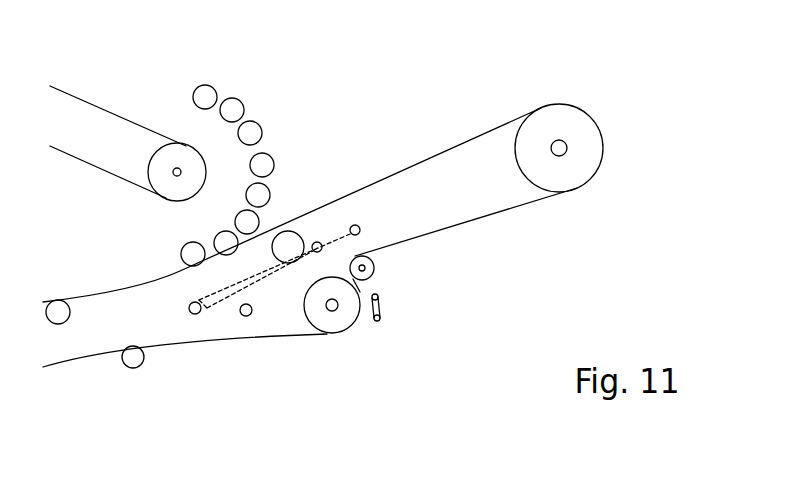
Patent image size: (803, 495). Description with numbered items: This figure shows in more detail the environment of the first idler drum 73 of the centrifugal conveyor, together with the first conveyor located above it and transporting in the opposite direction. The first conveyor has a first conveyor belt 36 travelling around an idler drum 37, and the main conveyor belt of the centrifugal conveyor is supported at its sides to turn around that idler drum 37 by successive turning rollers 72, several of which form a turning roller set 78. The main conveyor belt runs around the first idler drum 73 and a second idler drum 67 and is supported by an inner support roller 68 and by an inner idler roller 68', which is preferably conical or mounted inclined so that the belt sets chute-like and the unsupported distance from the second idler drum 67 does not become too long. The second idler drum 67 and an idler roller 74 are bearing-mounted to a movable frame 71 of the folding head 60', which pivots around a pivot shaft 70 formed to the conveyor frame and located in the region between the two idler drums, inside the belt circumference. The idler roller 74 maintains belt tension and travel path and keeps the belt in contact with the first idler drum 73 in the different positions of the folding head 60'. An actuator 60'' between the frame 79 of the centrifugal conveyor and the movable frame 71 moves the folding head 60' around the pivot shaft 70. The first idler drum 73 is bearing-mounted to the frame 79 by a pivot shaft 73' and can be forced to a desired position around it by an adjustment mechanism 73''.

The first conveyor belt 36 is at (115, 113).
The idler drum 37 is at (166, 142).
The turning rollers 72 is at (207, 86).
The turning roller set 78 is at (253, 96).
The movable frame 71 is at (444, 170).
The second idler drum 67 is at (562, 128).
The folding head 60' is at (628, 73).
The inner idler roller 68' is at (295, 216).
The pivot shaft 70 is at (319, 242).
The actuator 60'' is at (260, 311).
The inner support roller 68 is at (63, 281).
The frame of the centrifugal conveyor 79 is at (165, 327).
The pivot shaft 73' is at (234, 361).
The idler roller 74 is at (373, 271).
The first idler drum 73 is at (354, 324).
The adjustment mechanism 73'' is at (425, 339).